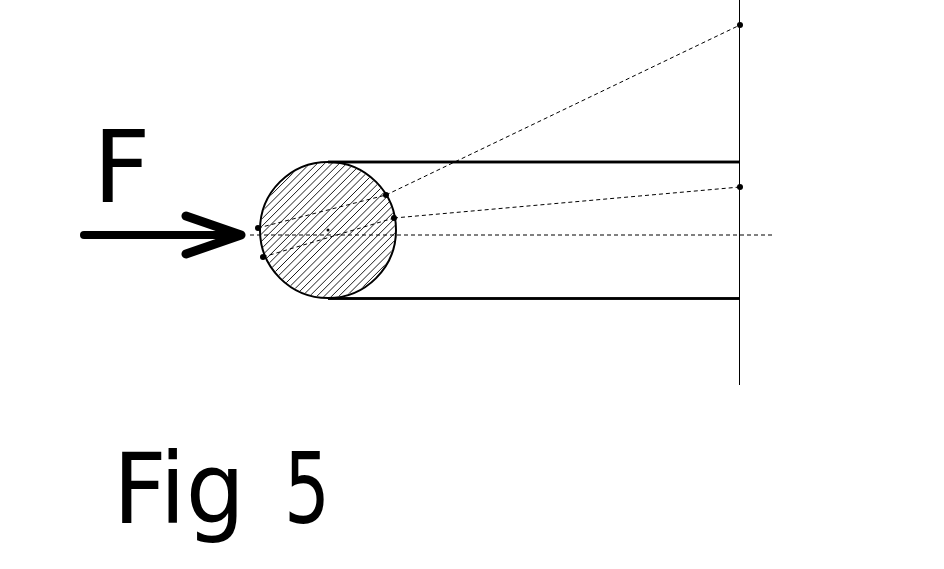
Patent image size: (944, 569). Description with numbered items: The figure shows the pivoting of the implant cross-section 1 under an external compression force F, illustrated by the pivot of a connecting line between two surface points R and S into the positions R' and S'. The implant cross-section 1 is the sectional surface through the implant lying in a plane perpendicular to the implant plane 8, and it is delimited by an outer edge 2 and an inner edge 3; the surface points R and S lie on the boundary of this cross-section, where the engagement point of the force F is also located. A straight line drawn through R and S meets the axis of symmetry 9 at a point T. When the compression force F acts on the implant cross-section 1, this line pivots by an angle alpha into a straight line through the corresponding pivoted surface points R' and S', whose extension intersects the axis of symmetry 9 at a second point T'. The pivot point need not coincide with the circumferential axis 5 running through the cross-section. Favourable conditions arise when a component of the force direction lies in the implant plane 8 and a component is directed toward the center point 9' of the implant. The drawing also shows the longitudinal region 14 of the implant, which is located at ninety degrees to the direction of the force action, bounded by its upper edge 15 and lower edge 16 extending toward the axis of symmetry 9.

The implant cross-section 1 is at (306, 274).
The outer edge 2 is at (248, 239).
The inner edge 3 is at (401, 225).
The circumferential axis 5 is at (329, 227).
The implant plane 8 is at (504, 236).
The axis of symmetry of the implant 9 is at (790, 95).
The center point of the implant 9' is at (781, 275).
The longitudinal region 14 is at (721, 271).
The upper edge 15 is at (523, 162).
The lower edge 16 is at (571, 300).